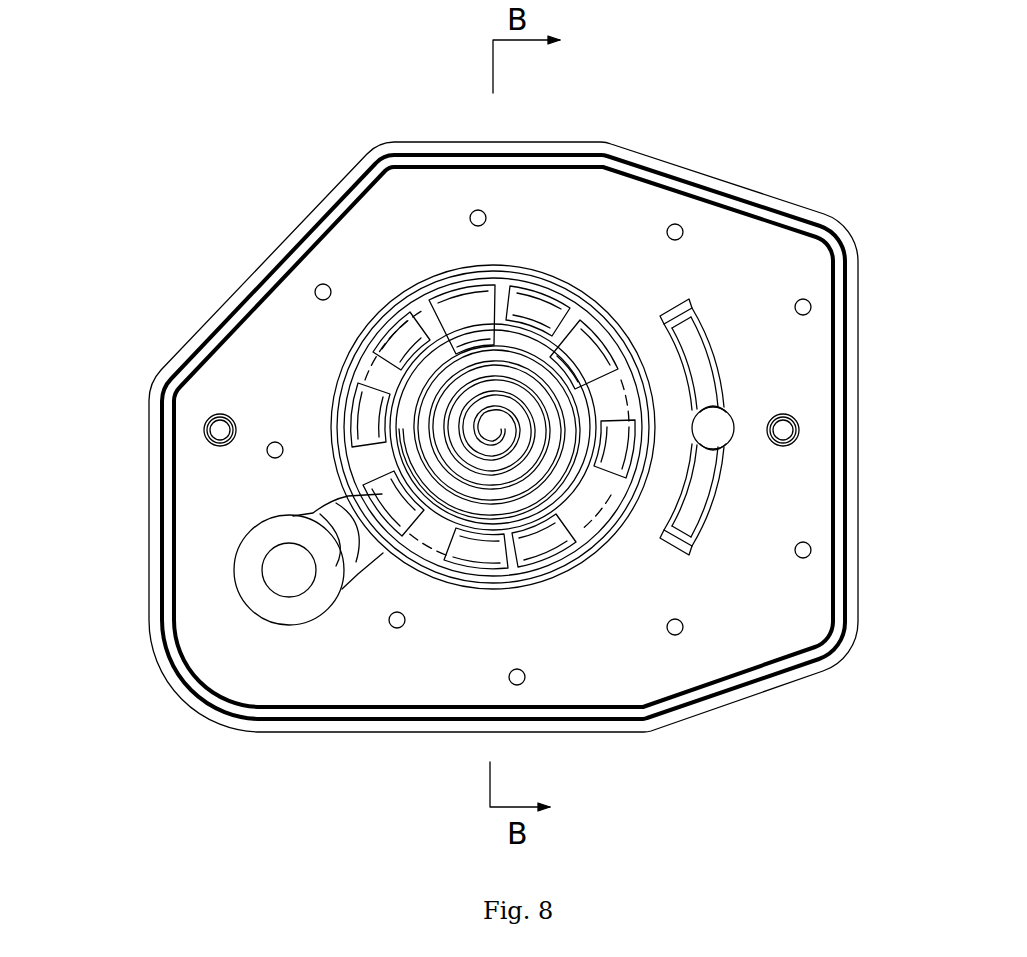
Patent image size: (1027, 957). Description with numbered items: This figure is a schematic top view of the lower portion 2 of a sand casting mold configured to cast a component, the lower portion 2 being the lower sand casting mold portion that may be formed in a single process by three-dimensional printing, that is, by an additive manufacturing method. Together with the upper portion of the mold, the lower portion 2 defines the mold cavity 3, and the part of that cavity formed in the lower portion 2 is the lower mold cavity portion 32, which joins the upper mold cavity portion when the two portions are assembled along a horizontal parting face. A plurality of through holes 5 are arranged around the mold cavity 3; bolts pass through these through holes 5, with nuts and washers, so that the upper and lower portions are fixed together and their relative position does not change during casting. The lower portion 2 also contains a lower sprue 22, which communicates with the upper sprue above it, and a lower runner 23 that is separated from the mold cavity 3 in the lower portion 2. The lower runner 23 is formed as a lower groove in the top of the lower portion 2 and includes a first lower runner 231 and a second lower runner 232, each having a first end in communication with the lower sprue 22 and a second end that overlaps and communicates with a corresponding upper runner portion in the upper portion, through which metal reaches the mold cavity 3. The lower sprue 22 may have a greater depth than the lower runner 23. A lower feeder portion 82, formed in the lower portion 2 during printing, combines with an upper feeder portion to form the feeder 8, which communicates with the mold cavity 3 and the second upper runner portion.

The lower portion 2 is at (806, 93).
The through holes 5 is at (478, 210).
The mold cavity 3 is at (493, 427).
The lower mold cavity portion 32 is at (490, 343).
The feeder 8 is at (308, 559).
The lower feeder portion 82 is at (287, 568).
The lower sprue 22 is at (713, 428).
The lower runner 23 is at (942, 393).
The first lower runner 231 is at (697, 358).
The second lower runner 232 is at (700, 507).